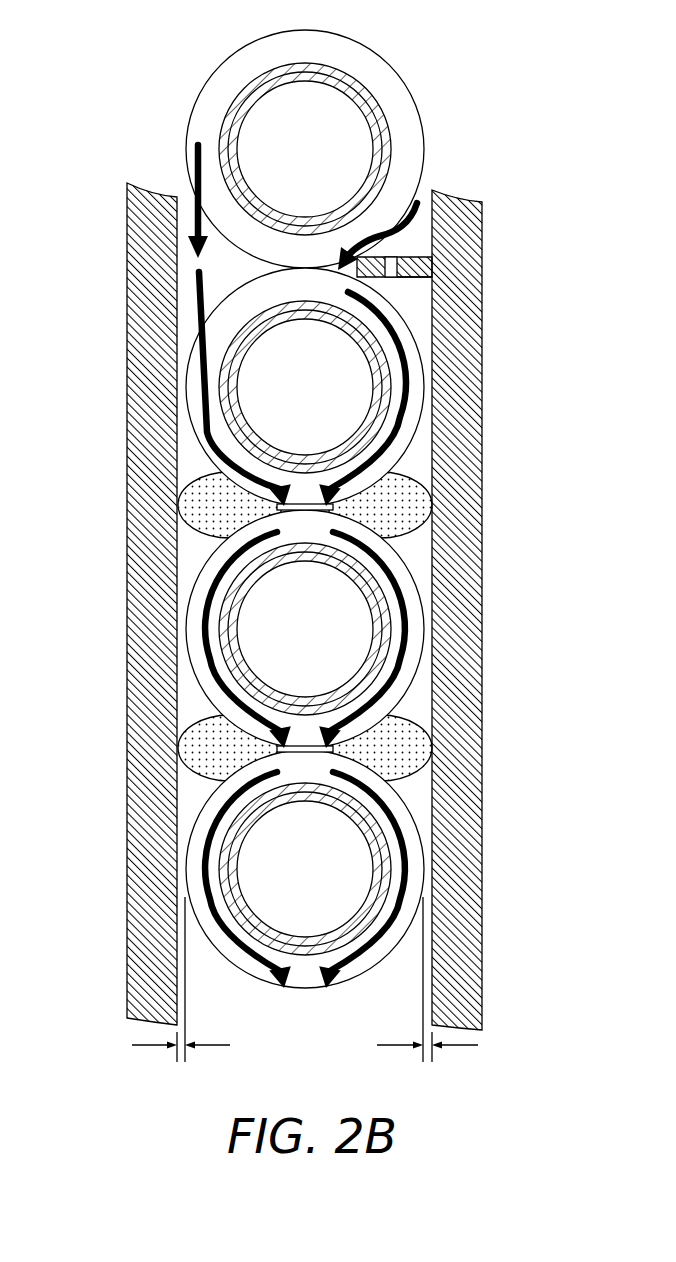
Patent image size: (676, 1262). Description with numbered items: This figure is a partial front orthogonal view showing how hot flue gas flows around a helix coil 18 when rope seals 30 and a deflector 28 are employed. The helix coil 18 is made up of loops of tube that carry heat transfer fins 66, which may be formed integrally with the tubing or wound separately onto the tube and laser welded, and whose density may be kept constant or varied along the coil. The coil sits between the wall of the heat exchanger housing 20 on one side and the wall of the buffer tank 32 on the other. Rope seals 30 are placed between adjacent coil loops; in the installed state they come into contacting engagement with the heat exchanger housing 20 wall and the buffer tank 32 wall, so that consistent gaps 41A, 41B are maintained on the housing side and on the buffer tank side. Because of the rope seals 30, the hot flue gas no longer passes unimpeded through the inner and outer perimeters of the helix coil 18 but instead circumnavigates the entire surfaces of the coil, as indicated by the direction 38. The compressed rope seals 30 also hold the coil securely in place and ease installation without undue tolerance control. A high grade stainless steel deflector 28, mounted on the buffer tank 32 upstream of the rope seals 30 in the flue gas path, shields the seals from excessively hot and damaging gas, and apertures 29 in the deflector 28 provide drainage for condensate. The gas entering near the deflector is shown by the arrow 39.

The helix coil 18 is at (227, 347).
The heat exchanger housing 20 is at (127, 527).
The deflector 28 is at (415, 278).
The apertures 29 is at (380, 257).
The rope seals 30 is at (203, 474).
The buffer tank 32 is at (483, 433).
The direction 38 is at (212, 408).
The inlet flow 39 is at (407, 224).
The gap 41A is at (128, 1062).
The gap 41B is at (530, 1062).
The fins 66 is at (420, 372).